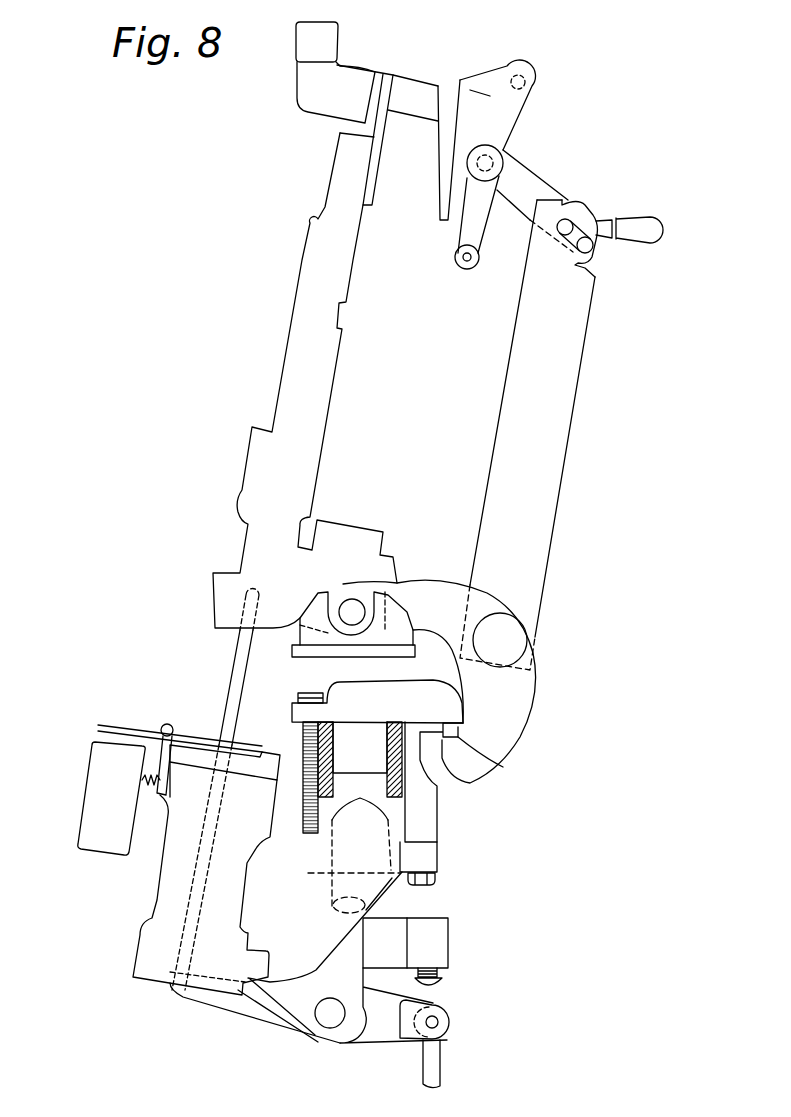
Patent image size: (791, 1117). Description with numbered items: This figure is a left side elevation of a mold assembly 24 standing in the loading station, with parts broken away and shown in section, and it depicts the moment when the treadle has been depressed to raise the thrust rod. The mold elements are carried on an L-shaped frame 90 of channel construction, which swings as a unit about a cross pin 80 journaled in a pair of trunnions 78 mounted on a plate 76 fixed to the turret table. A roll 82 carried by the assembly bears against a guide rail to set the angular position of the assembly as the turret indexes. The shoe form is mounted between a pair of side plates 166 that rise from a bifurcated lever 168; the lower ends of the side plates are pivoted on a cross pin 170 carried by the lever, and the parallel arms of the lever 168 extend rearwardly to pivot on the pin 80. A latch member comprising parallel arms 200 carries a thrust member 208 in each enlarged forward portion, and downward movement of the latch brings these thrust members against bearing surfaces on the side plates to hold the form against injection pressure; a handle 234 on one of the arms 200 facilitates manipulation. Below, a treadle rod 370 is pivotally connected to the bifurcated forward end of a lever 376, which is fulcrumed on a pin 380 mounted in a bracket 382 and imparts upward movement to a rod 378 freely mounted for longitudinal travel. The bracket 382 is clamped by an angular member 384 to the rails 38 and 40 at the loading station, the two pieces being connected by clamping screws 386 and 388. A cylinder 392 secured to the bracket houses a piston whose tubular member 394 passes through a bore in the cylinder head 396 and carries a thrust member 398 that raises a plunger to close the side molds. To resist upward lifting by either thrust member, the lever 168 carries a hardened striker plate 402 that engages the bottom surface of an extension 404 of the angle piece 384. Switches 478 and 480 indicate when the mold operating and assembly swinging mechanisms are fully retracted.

The mold assembly 24 is at (603, 500).
The rail 38 is at (328, 738).
The rail 40 is at (388, 752).
The plate 76 is at (297, 658).
The trunnions 78 is at (315, 612).
The cross pin 80 is at (352, 600).
The roll 82 is at (330, 43).
The L-shaped frame 90 is at (248, 344).
The side plates 166 is at (572, 383).
The bifurcated lever 168 is at (520, 693).
The cross pin 170 is at (520, 640).
The arms 200 is at (523, 180).
The thrust member 208 is at (580, 235).
The handle 234 is at (673, 228).
The treadle rod 370 is at (435, 1062).
The lever 376 is at (220, 1003).
The rod 378 is at (246, 632).
The pin 380 is at (330, 1025).
The bracket 382 is at (300, 992).
The angular member 384 is at (380, 690).
The clamping screw 386 is at (302, 732).
The clamping screw 388 is at (435, 878).
The cylinder 392 is at (150, 932).
The tubular member 394 is at (208, 737).
The head 396 is at (257, 768).
The thrust member 398 is at (233, 698).
The striker plate 402 is at (497, 753).
The extension 404 is at (445, 707).
The switch 478 is at (92, 808).
The switch 480 is at (435, 942).